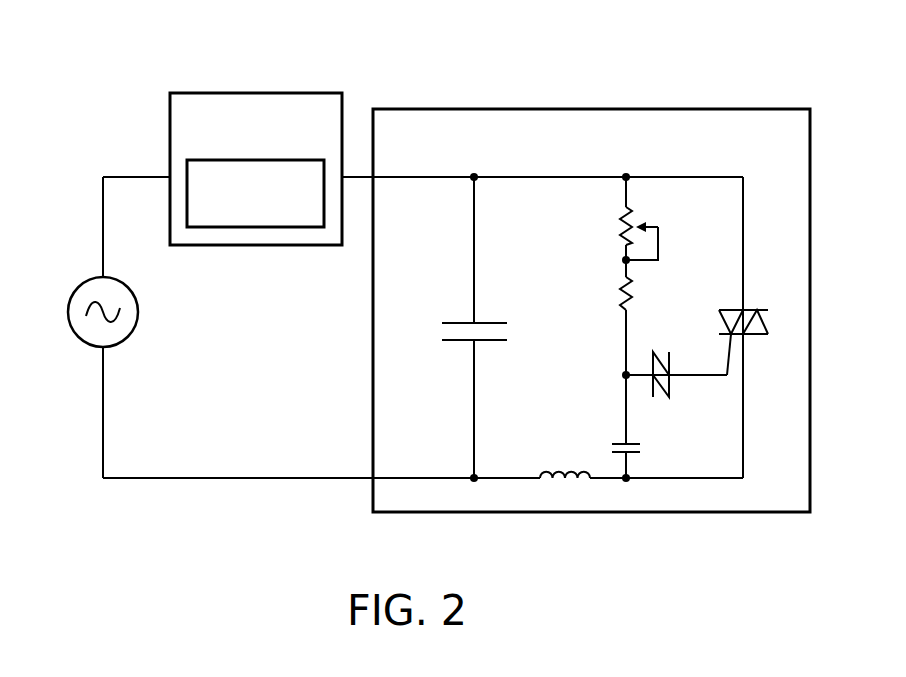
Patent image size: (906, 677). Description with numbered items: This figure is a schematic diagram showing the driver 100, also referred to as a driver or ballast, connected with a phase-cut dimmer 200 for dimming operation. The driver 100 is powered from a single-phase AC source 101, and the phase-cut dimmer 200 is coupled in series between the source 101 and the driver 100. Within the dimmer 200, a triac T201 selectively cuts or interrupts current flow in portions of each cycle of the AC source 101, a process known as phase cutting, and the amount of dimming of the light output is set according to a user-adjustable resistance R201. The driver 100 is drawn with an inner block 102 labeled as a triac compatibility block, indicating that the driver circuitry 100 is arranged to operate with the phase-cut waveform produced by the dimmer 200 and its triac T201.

The phase-cut dimmer 200 is at (590, 109).
The driver 100 is at (256, 93).
The triac compatibility circuit 102 is at (217, 160).
The single-phase AC source 101 is at (73, 295).
The user-adjustable resistance R201 is at (619, 243).
The triac T201 is at (755, 307).